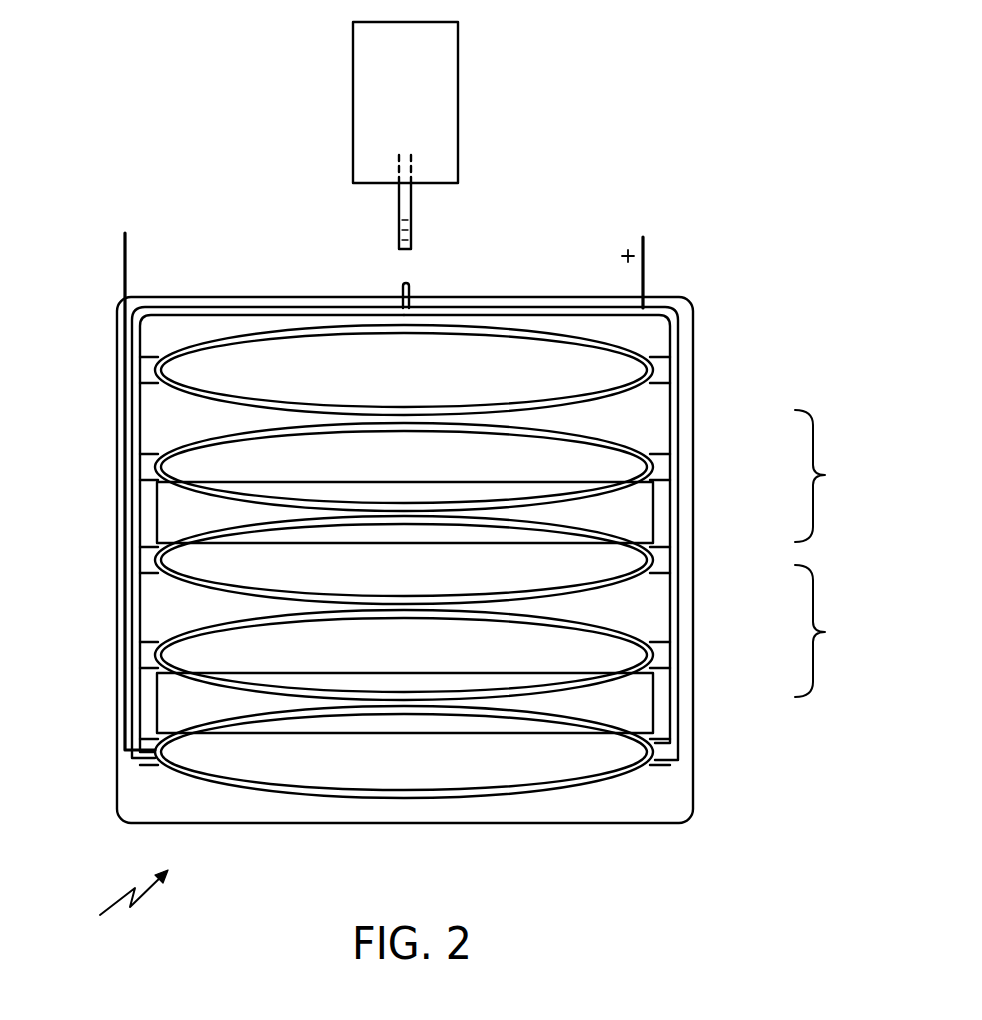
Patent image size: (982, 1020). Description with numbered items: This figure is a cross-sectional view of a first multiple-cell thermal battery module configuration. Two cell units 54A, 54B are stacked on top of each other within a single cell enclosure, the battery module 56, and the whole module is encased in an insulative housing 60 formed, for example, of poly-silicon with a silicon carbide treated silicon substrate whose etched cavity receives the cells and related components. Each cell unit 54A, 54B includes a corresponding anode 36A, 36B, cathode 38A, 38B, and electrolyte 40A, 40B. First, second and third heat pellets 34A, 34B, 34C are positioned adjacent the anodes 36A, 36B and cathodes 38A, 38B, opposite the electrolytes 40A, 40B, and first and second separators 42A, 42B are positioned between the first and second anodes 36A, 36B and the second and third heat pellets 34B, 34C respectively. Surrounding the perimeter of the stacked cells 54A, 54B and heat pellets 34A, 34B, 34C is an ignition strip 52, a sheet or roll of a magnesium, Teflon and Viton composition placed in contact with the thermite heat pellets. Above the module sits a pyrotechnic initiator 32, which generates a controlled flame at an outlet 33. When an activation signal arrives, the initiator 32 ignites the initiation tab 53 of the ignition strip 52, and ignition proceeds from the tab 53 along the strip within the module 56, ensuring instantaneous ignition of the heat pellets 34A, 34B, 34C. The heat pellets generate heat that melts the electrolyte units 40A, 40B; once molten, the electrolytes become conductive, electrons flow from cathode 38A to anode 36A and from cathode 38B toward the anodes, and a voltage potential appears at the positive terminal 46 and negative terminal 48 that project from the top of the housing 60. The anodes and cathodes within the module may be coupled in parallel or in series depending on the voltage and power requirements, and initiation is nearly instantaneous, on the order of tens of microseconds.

The pyrotechnic initiator 32 is at (460, 123).
The outlet 33 is at (414, 196).
The positive voltage terminal 46 is at (648, 255).
The negative voltage terminal 48 is at (122, 272).
The ignition strip 52 is at (130, 318).
The initiation tab 53 is at (411, 290).
The insulative housing 60 is at (672, 787).
The first heat pellet 34A is at (665, 365).
The second heat pellet 34B is at (152, 560).
The third heat pellet 34C is at (152, 760).
The first anode 36A is at (155, 510).
The second anode 36B is at (155, 690).
The first cathode 38A is at (145, 415).
The second cathode 38B is at (665, 605).
The first electrolyte 40A is at (665, 465).
The second electrolyte 40B is at (152, 650).
The first separator 42A is at (663, 505).
The second separator 42B is at (660, 680).
The first cell unit 54A is at (842, 476).
The second cell unit 54B is at (844, 631).
The battery module 56 is at (116, 914).